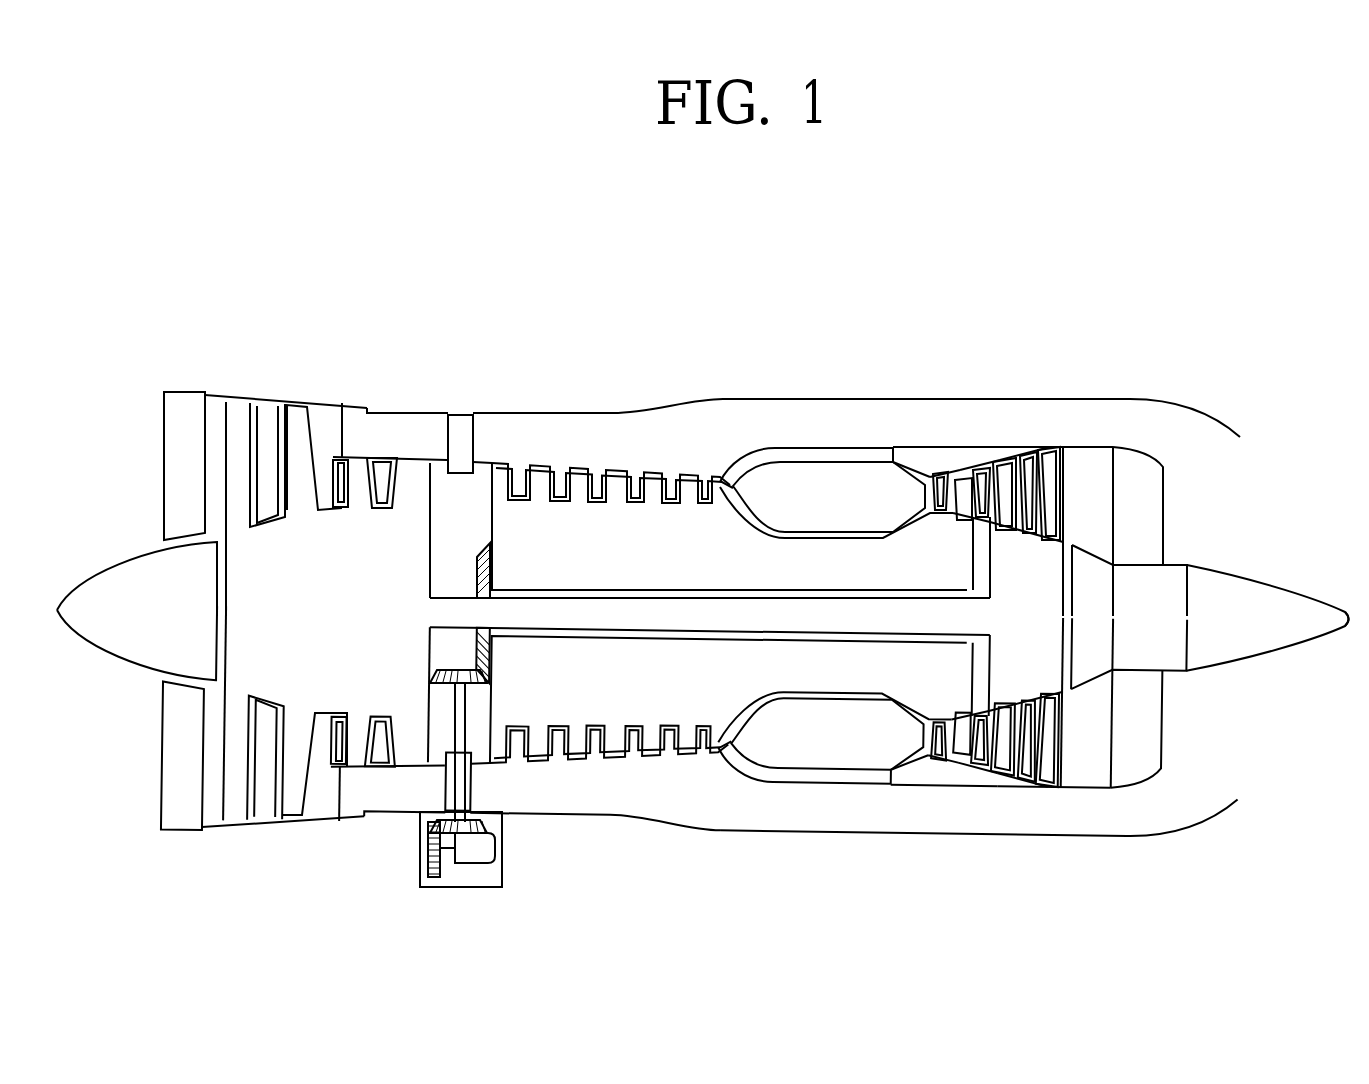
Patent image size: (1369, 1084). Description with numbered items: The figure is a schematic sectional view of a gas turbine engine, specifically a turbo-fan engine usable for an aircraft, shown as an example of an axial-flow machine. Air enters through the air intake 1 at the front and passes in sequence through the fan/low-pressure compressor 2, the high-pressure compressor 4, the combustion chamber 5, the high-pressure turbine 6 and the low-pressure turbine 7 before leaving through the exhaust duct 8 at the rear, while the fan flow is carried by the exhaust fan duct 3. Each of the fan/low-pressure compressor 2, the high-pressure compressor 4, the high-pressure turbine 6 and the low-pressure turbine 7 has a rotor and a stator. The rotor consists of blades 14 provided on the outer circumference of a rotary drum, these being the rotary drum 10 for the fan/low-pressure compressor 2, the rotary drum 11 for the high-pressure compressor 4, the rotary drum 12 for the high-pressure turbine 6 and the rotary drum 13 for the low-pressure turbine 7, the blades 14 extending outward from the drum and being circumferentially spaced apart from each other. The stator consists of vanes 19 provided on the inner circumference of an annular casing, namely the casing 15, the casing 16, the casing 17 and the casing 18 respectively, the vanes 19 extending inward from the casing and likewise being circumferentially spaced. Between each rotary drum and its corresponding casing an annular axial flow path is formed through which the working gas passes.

The air intake 1 is at (152, 444).
The fan/low-pressure compressor 2 is at (447, 368).
The exhaust fan duct 3 is at (490, 463).
The high-pressure compressor 4 is at (725, 368).
The combustion chamber 5 is at (813, 460).
The high-pressure turbine 6 is at (915, 383).
The low-pressure turbine 7 is at (993, 383).
The exhaust duct 8 is at (1166, 466).
The rotary drum 10 is at (330, 570).
The rotary drum 11 is at (555, 570).
The rotary drum 12 is at (895, 584).
The rotary drum 13 is at (1009, 600).
The blades 14 is at (410, 757).
The annular casing 15 is at (383, 427).
The annular casing 16 is at (588, 428).
The annular casing 17 is at (927, 457).
The annular casing 18 is at (1010, 455).
The vanes 19 is at (380, 732).